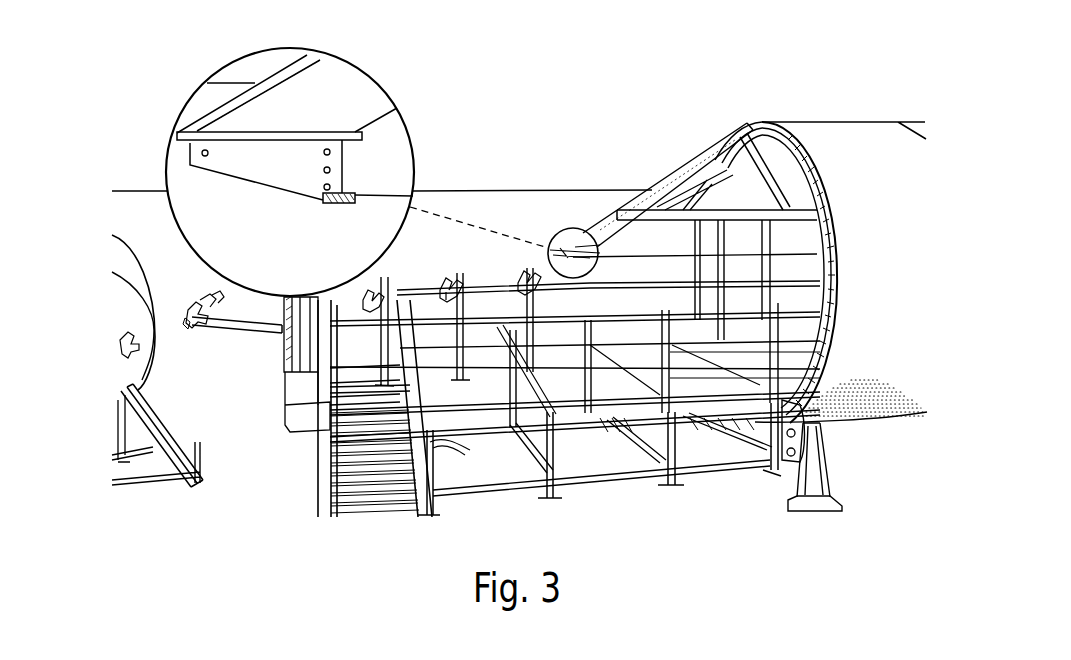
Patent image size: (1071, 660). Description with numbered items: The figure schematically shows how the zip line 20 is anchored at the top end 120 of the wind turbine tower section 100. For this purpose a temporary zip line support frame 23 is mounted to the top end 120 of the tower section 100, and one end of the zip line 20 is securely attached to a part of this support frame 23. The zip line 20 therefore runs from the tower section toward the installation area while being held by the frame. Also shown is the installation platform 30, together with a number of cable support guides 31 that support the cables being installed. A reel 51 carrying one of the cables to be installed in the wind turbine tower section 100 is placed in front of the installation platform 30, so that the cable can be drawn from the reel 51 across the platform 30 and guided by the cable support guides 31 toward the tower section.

The wind turbine tower section 100 is at (842, 122).
The top end 120 is at (777, 120).
The zip line support frame 23 is at (353, 93).
The zip line 20 is at (380, 203).
The cable support guides 31 is at (455, 280).
The installation platform 30 is at (580, 420).
The reel 51 is at (112, 236).